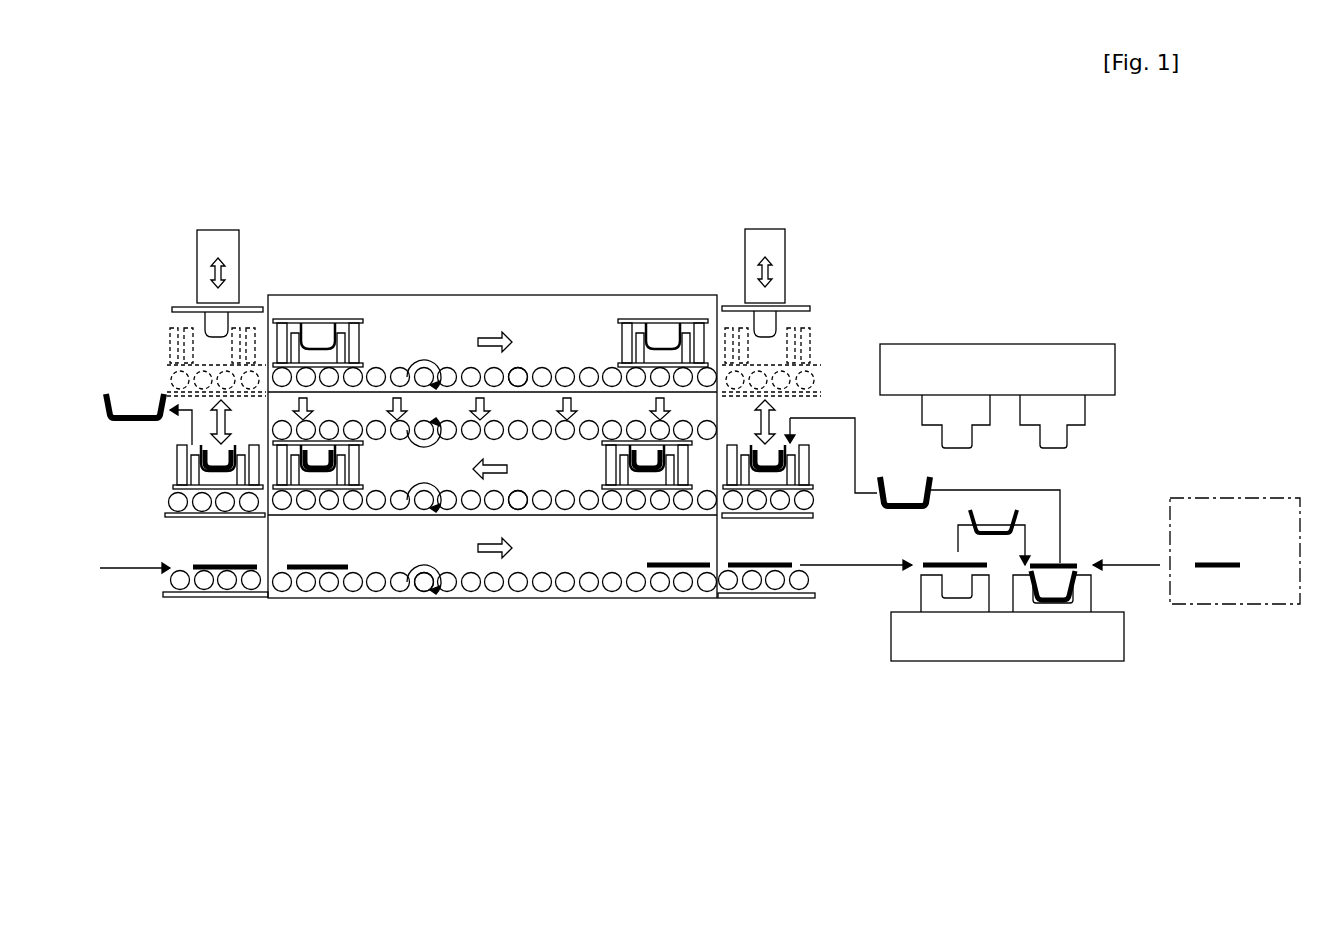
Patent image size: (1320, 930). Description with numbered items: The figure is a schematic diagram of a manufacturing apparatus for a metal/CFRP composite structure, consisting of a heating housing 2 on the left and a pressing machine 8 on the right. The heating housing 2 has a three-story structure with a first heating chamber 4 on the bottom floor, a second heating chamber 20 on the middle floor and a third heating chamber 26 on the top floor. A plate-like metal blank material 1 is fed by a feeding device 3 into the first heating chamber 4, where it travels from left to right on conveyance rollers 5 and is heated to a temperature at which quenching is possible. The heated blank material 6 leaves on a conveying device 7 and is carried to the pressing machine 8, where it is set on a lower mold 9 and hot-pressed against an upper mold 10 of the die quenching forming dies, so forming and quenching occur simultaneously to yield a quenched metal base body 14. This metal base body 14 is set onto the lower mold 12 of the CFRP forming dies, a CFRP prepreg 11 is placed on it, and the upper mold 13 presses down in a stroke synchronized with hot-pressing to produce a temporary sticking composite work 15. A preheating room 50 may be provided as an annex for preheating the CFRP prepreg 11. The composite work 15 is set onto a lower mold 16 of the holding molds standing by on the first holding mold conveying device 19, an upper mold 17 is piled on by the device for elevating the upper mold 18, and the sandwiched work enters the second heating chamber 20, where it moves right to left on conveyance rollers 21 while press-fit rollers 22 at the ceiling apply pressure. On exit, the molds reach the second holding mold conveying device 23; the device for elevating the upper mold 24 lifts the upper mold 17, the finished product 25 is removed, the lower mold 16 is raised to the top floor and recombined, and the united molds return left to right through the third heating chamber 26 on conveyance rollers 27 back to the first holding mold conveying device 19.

The blank material 1 is at (212, 566).
The heating housing 2 is at (480, 600).
The feeding device 3 is at (216, 598).
The first heating chamber 4 is at (424, 564).
The conveyance rollers 5 is at (418, 590).
The high temperature state blank material 6 is at (760, 564).
The conveying device 7 is at (745, 598).
The pressing machine 8 is at (1104, 628).
The lower mold of DQ forming dies 9 is at (930, 590).
The upper mold of DQ forming dies 10 is at (920, 410).
The CFRP prepreg 11 is at (1212, 563).
The lower mold of CFRP forming dies 12 is at (1080, 595).
The upper mold of CFRP forming dies 13 is at (1073, 408).
The metal base body 14 is at (1017, 507).
The temporary sticking composite work 15 is at (932, 479).
The lower mold of holding molds for curing/adhering 16 is at (803, 468).
The upper mold of holding molds for curing/adhering 17 is at (808, 308).
The device for elevating the upper mold 18 is at (778, 270).
The first holding mold conveying device 19 is at (813, 519).
The second heating chamber 20 is at (495, 476).
The conveyance rollers 21 is at (520, 498).
The press-fit rollers 22 is at (500, 432).
The second holding mold conveying device 23 is at (172, 500).
The device for elevating the upper mold 24 is at (207, 272).
The finished product 25 is at (152, 392).
The third heating chamber 26 is at (495, 354).
The conveyance rollers 27 is at (520, 376).
The preheating room 50 is at (1233, 498).